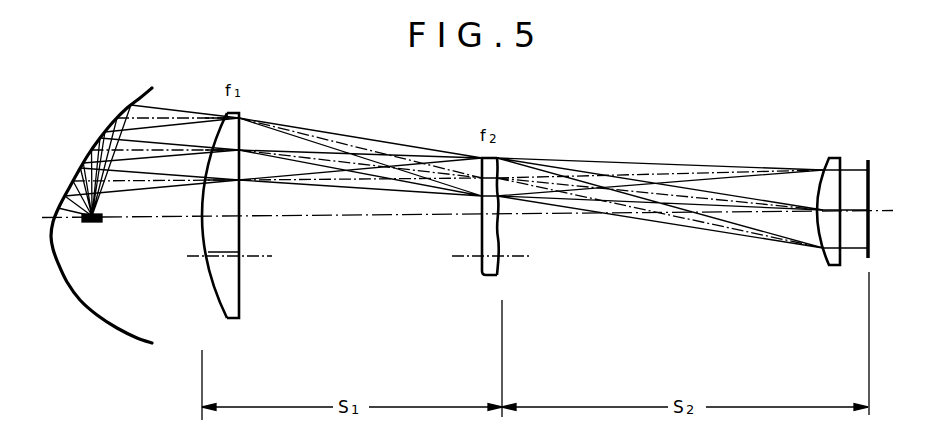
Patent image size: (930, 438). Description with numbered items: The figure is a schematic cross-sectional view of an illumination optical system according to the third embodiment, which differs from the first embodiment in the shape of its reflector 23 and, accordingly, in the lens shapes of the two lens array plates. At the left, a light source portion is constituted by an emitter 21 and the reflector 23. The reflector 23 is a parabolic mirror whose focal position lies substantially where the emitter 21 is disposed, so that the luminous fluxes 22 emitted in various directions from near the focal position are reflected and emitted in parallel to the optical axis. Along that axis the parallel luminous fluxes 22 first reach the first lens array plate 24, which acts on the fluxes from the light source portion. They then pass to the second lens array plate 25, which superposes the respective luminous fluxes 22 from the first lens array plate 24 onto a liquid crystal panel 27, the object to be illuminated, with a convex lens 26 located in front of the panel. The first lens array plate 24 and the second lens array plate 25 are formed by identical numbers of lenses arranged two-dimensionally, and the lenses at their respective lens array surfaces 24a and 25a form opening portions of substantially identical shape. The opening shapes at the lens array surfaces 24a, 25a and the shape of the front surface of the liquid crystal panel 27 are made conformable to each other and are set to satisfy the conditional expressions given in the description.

The emitter 21 is at (97, 222).
The luminous fluxes 22 is at (107, 198).
The reflector 23 is at (127, 104).
The first lens array plate 24 is at (210, 235).
The lens array surface 24a is at (212, 287).
The second lens array plate 25 is at (510, 236).
The lens array surface 25a is at (489, 277).
The convex lens 26 is at (828, 253).
The liquid crystal panel 27 is at (864, 257).